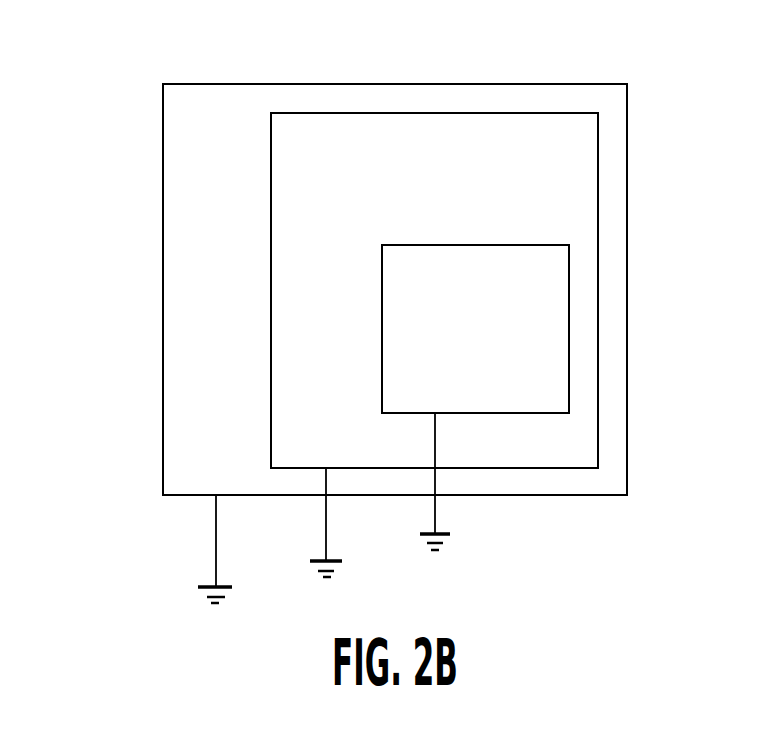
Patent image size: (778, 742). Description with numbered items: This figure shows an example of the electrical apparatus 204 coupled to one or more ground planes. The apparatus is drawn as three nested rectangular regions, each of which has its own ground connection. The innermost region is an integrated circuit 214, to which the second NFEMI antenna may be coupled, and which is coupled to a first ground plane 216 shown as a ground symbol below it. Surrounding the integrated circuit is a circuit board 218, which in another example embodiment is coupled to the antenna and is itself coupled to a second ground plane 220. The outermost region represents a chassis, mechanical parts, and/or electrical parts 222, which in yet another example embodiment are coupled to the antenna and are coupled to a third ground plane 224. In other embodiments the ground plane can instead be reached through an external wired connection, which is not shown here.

The electrical apparatus 204 is at (685, 106).
The integrated circuit 214 is at (569, 291).
The first ground plane 216 is at (446, 533).
The circuit board 218 is at (271, 248).
The second ground plane 220 is at (335, 558).
The chassis, mechanical parts, and/or electrical parts 222 is at (163, 154).
The third ground plane 224 is at (200, 587).